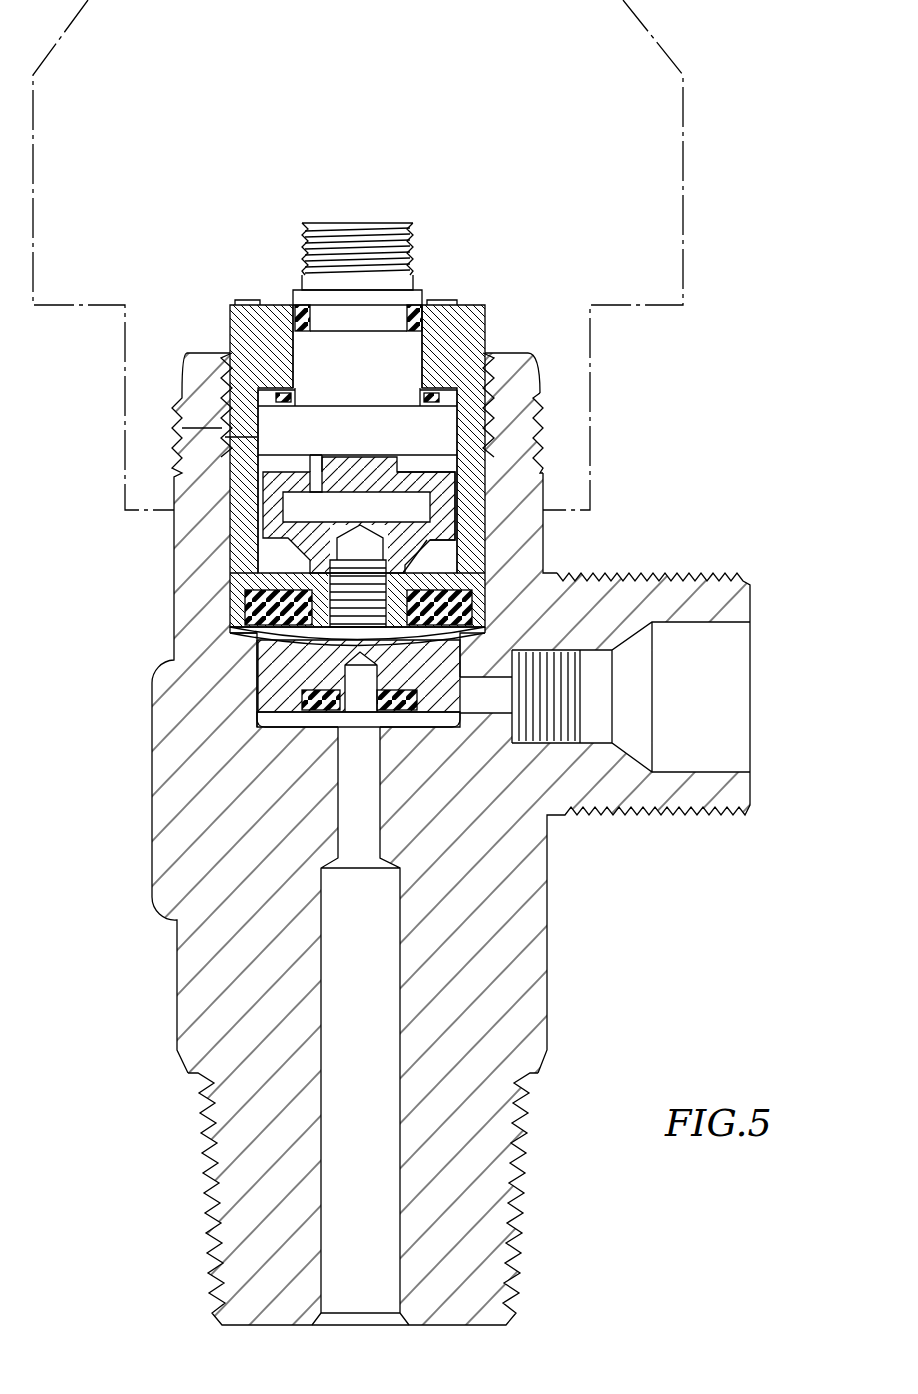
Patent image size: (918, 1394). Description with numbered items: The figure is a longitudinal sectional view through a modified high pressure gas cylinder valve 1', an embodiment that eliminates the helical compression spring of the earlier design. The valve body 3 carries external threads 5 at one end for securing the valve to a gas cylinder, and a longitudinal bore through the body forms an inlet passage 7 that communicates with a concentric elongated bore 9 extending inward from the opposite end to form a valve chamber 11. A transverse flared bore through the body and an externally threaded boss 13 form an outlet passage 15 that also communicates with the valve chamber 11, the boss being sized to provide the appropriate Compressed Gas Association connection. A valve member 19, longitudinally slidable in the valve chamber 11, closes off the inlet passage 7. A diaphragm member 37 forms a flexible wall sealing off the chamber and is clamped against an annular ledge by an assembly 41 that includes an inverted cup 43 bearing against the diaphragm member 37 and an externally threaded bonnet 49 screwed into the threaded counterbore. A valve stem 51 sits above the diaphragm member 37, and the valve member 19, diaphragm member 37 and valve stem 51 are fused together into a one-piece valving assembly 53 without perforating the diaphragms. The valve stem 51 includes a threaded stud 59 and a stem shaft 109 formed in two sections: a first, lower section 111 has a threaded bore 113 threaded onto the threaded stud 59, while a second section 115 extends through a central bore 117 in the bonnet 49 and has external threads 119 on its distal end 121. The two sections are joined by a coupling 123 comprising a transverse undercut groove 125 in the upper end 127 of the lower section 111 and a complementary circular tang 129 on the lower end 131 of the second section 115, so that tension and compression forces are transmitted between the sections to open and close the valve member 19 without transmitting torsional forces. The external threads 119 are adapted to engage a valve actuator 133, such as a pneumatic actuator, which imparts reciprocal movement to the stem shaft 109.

The modified gas cylinder valve 1' is at (758, 395).
The valve body 3 is at (152, 868).
The external threads 5 is at (202, 1184).
The inlet passage 7 is at (333, 842).
The elongated bore 9 is at (260, 672).
The valve chamber 11 is at (292, 720).
The externally threaded boss 13 is at (652, 578).
The outlet passage 15 is at (603, 660).
The valve member 19 is at (240, 704).
The diaphragm member 37 is at (447, 637).
The assembly 41 is at (500, 492).
The inverted cup 43 is at (473, 580).
The bonnet 49 is at (257, 328).
The valve stem 51 is at (448, 550).
The one-piece valving assembly 53 is at (218, 640).
The threaded stud 59 is at (353, 583).
The stem shaft 109 is at (250, 482).
The first, lower section 111 is at (305, 553).
The threaded bore 113 is at (300, 597).
The second section 115 is at (385, 408).
The central bore 117 is at (413, 347).
The external threads 119 is at (383, 236).
The distal end 121 is at (317, 224).
The coupling 123 is at (468, 466).
The transverse undercut groove 125 is at (420, 470).
The upper end 127 is at (268, 472).
The circular tang 129 is at (288, 507).
The lower end 131 is at (316, 457).
The valve actuator 133 is at (683, 172).